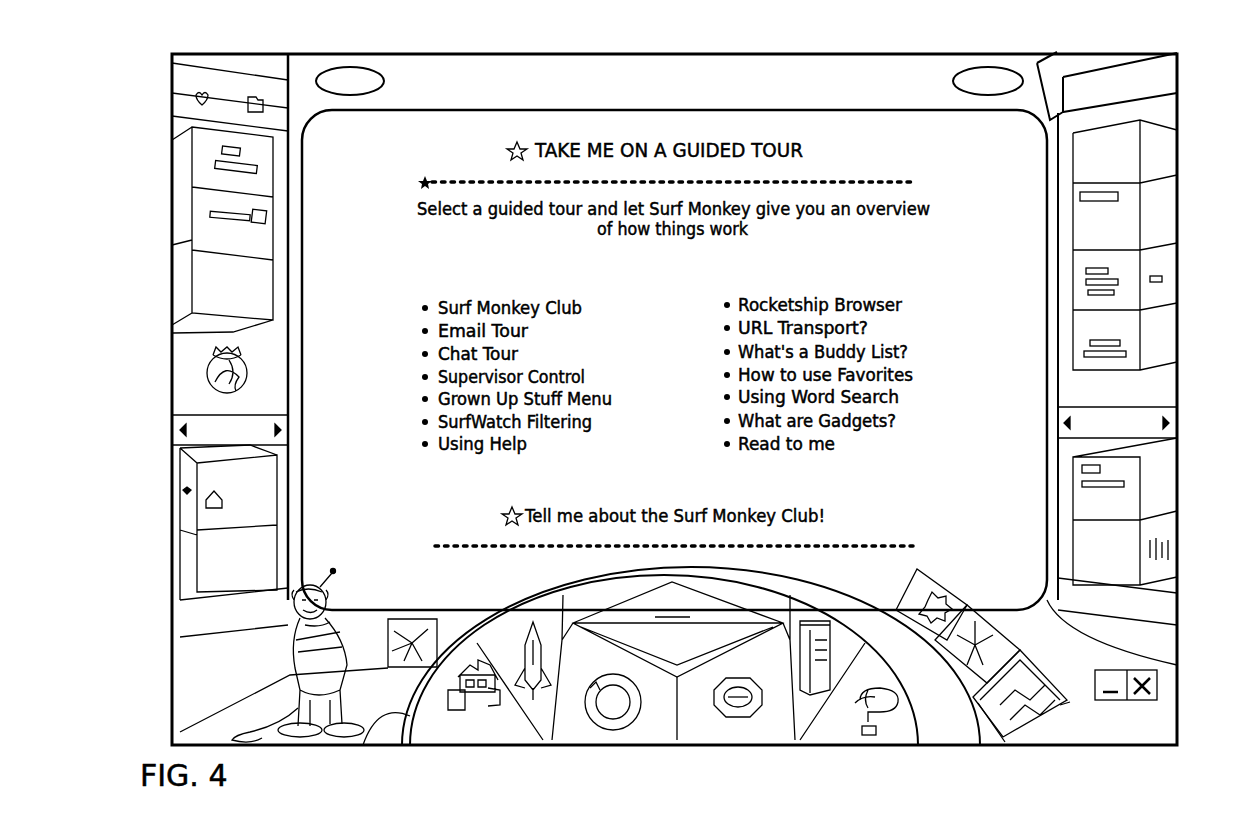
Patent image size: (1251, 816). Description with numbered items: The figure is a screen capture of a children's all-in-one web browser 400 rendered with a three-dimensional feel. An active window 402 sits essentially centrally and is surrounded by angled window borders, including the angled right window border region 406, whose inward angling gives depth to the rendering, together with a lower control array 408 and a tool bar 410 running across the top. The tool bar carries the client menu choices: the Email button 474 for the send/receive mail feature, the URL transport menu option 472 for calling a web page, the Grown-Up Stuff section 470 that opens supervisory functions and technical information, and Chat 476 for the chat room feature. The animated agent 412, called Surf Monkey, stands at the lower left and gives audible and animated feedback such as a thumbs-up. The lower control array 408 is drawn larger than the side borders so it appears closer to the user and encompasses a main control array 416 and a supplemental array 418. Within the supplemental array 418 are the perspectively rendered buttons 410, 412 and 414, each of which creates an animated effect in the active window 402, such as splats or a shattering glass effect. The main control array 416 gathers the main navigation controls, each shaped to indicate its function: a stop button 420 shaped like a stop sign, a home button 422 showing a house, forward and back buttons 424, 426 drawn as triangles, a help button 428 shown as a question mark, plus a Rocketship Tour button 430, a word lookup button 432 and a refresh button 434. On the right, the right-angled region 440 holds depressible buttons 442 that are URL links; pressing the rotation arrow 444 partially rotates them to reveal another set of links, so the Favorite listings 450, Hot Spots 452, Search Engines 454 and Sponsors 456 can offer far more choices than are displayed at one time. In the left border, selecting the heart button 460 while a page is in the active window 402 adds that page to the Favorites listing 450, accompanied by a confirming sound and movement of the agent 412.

The web browser 400 is at (1196, 174).
The active window 402 is at (1157, 665).
The angled right window border region 406 is at (1177, 390).
The lower control array 408 is at (386, 735).
The button 410 is at (668, 72).
The animated agent 412 is at (292, 740).
The button 414 is at (917, 742).
The main control array 416 is at (355, 746).
The supplemental array 418 is at (1063, 725).
The stop button 420 is at (735, 718).
The home button 422 is at (466, 712).
The forward button 424 is at (691, 656).
The back button 426 is at (690, 655).
The help button 428 is at (866, 738).
The Rocketship Tour button 430 is at (540, 740).
The word lookup button 432 is at (815, 700).
The refresh button 434 is at (615, 731).
The right-angled region 440 is at (1197, 350).
The depressible buttons 442 is at (1175, 270).
The rotation arrow 444 is at (1170, 421).
The Favorite listings 450 is at (172, 76).
The Hot Spots listings 452 is at (192, 162).
The Search Engines listings 454 is at (172, 438).
The Sponsors listings 456 is at (172, 618).
The heart button 460 is at (190, 100).
The Grown-Up Stuff section 470 is at (848, 68).
The URL transport menu option 472 is at (500, 68).
The Email button 474 is at (360, 68).
The Chat 476 is at (990, 68).